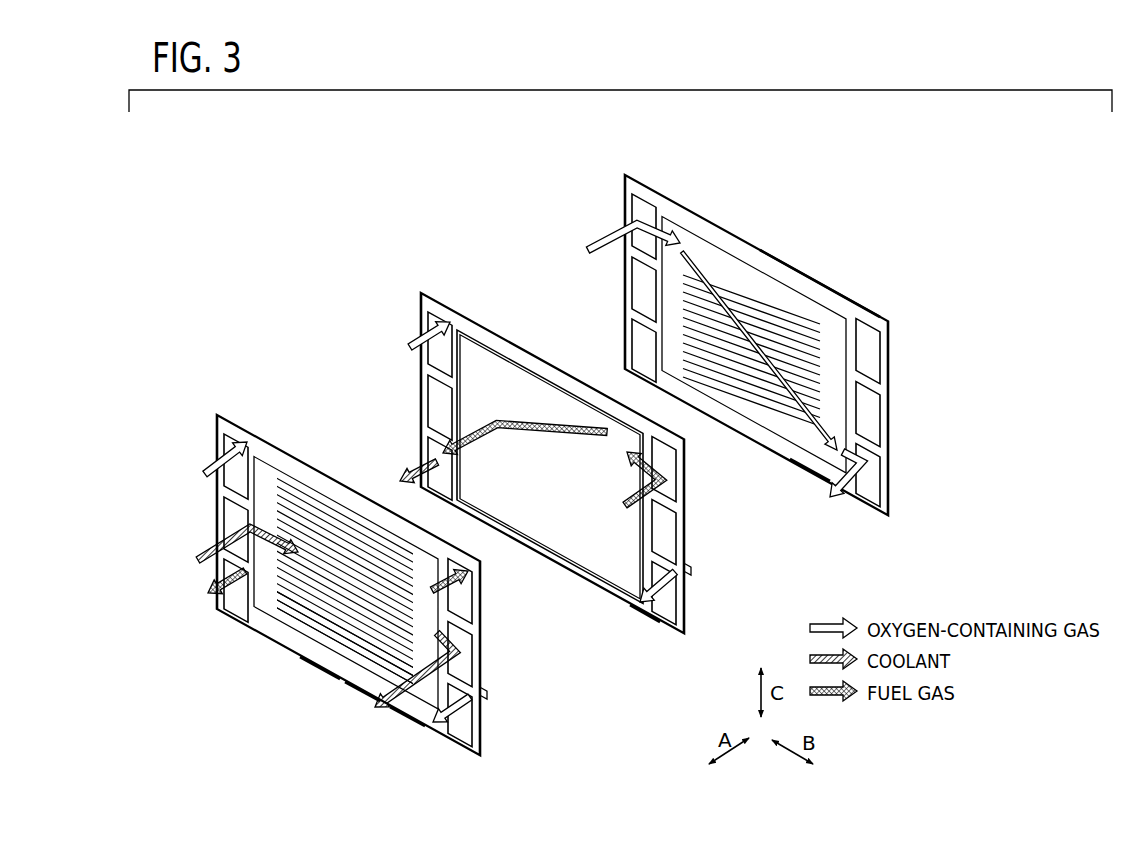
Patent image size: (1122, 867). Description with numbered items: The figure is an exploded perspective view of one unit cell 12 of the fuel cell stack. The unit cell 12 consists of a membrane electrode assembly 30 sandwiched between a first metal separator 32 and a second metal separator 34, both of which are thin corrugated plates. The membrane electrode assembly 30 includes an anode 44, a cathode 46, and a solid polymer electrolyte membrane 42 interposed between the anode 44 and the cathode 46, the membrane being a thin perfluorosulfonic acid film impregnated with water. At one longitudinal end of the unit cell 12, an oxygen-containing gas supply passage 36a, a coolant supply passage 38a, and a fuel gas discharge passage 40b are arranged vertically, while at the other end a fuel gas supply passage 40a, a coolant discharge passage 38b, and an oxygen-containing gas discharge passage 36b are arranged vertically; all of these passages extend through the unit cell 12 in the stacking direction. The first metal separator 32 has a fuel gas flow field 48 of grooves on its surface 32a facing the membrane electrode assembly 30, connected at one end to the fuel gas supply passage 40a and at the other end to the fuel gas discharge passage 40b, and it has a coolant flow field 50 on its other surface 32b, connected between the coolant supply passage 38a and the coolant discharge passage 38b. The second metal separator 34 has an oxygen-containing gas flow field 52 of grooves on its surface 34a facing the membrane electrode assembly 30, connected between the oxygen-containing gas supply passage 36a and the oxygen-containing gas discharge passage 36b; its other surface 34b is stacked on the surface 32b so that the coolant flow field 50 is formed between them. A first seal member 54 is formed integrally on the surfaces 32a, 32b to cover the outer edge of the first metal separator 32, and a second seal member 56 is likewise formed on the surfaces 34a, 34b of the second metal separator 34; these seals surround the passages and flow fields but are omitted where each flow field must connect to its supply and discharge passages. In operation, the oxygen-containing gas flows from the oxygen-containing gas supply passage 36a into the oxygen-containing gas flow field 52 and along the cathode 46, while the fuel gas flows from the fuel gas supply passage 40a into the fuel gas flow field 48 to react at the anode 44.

The unit cell 12 is at (239, 304).
The membrane electrode assembly 30 is at (420, 291).
The first metal separator 32 is at (216, 413).
The second metal separator 34 is at (624, 173).
The oxygen-containing gas supply passage 36a is at (232, 443).
The oxygen-containing gas discharge passage 36b is at (462, 721).
The coolant supply passage 38a is at (232, 531).
The coolant discharge passage 38b is at (458, 661).
The fuel gas supply passage 40a is at (470, 597).
The fuel gas discharge passage 40b is at (232, 575).
The solid polymer electrolyte membrane 42 is at (645, 618).
The anode 44 is at (614, 577).
The cathode 46 is at (510, 385).
The fuel gas flow field 48 is at (300, 485).
The coolant flow field 50 is at (298, 620).
The first seal member 54 is at (333, 675).
The surface of first metal separator 32a is at (408, 718).
The other surface of first metal separator 32b is at (362, 692).
The oxygen-containing gas flow field 52 is at (786, 290).
The second seal member 56 is at (836, 292).
The surface of second metal separator 34a is at (814, 470).
The other surface of second metal separator 34b is at (755, 432).